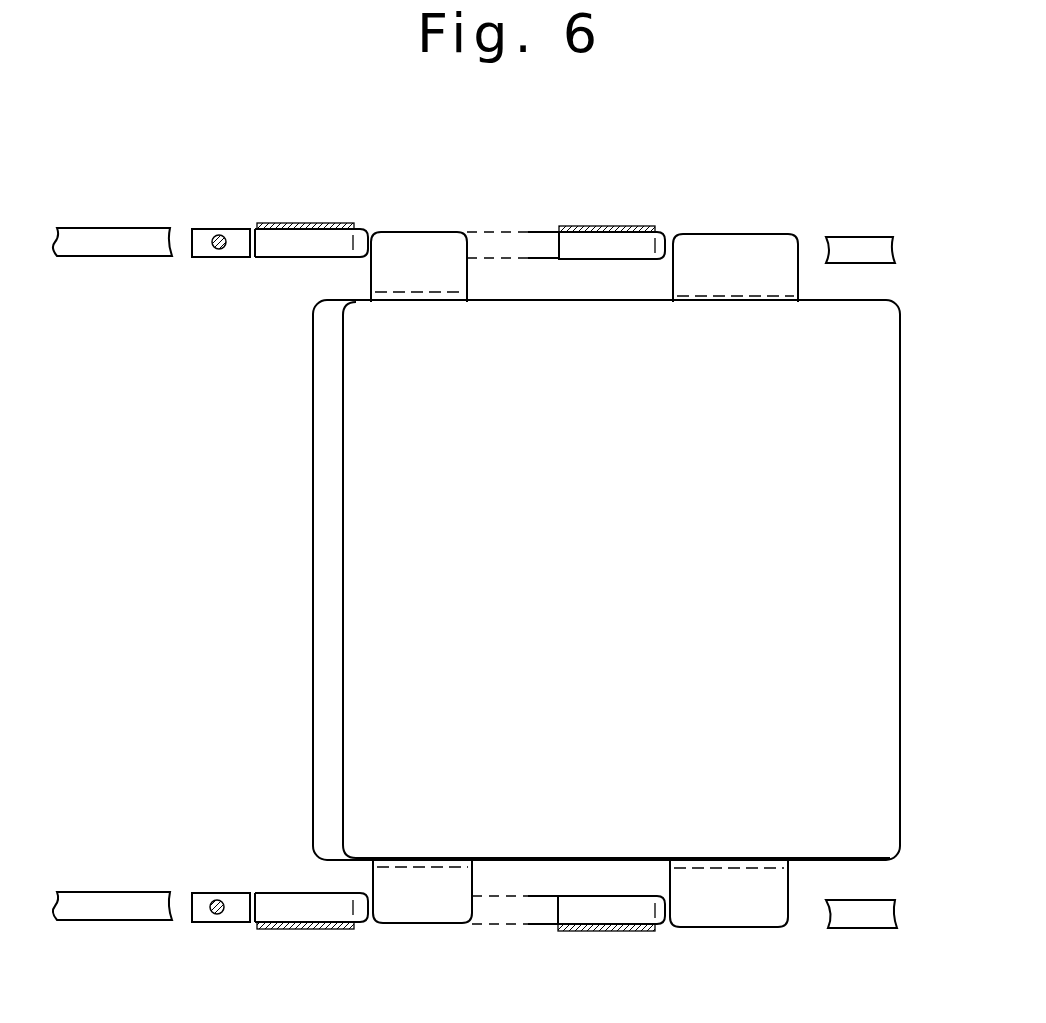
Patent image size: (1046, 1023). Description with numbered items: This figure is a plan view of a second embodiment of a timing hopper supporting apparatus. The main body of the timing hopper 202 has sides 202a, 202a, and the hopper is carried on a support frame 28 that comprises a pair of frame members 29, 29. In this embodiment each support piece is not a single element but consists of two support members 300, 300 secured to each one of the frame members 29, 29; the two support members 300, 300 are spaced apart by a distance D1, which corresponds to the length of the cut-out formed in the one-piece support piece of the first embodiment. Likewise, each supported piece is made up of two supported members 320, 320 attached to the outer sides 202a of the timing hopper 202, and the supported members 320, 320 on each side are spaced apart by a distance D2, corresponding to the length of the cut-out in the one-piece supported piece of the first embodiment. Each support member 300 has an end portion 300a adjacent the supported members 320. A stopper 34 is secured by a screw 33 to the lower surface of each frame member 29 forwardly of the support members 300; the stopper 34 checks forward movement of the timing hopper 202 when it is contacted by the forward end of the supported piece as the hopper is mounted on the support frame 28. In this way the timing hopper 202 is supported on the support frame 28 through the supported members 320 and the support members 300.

The support frame 28 is at (113, 222).
The frame member 29 is at (161, 228).
The screw 33 is at (219, 235).
The stopper 34 is at (240, 237).
The support member 300 is at (305, 227).
The lead end portion 300a is at (360, 240).
The supported member 320 is at (440, 237).
The timing hopper 202 is at (352, 600).
The side of timing hopper 202a is at (858, 308).
The distance between support members D1 is at (508, 232).
The distance between supported members D2 is at (563, 864).